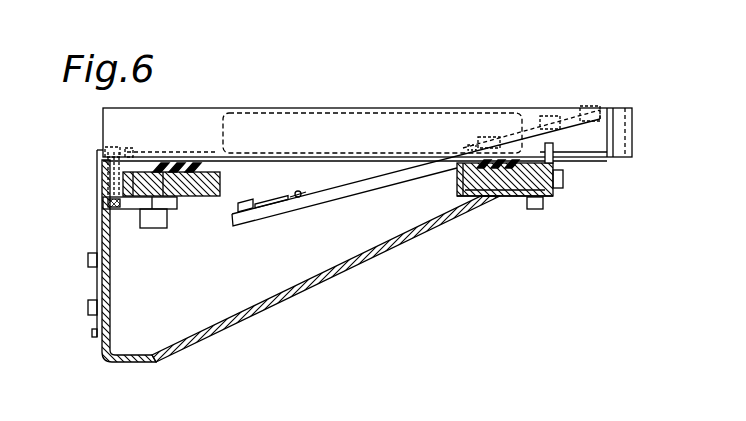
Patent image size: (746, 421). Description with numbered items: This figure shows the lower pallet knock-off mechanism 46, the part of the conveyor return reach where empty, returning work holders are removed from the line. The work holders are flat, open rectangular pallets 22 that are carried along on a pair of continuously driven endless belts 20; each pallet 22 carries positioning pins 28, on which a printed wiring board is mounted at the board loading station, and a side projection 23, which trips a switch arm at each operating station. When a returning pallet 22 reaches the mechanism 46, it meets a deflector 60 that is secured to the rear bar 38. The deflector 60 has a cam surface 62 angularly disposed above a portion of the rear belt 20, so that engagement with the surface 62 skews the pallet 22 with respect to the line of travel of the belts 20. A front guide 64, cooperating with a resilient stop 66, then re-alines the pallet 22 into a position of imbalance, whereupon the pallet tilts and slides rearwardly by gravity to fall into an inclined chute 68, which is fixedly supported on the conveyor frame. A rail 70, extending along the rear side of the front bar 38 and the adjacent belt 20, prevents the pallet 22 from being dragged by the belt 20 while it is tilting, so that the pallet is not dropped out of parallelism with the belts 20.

The lower pallet knock-off mechanism 46 is at (377, 88).
The front guide 64 is at (634, 129).
The resilient stop 66 is at (222, 118).
The deflector 60 is at (146, 155).
The cam surface 62 is at (184, 158).
The endless parallel belt 20 is at (204, 170).
The bar 38 is at (203, 198).
The rail 70 is at (458, 197).
The inclined chute 68 is at (385, 247).
The pallet 22 is at (357, 197).
The positioning pin 28 is at (463, 150).
The side projection 23 is at (583, 104).